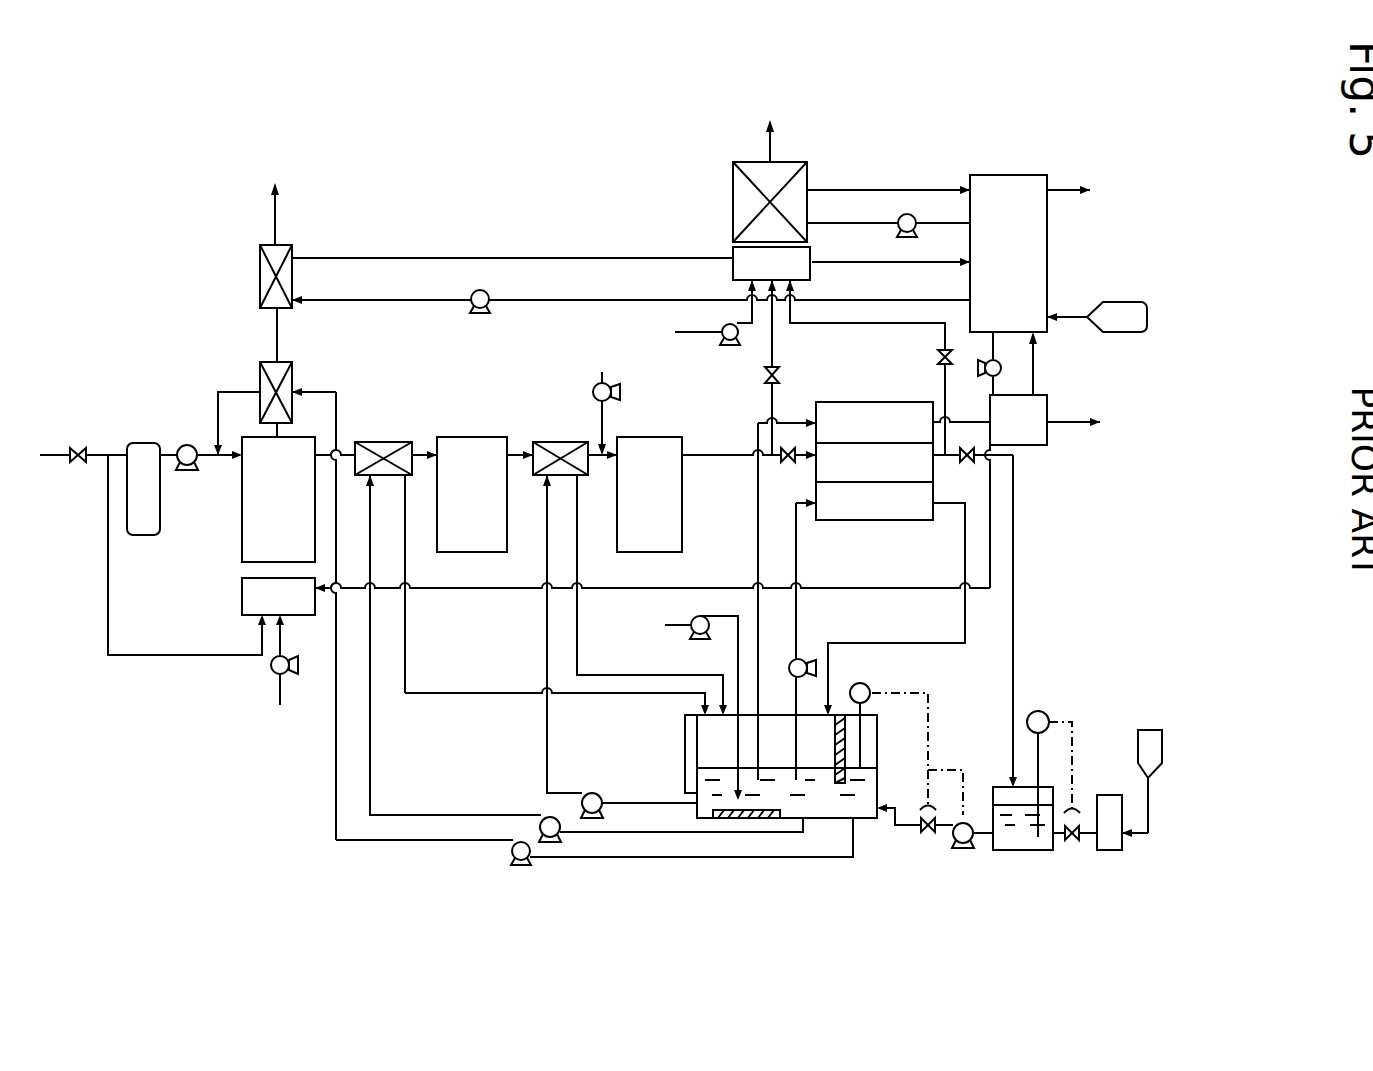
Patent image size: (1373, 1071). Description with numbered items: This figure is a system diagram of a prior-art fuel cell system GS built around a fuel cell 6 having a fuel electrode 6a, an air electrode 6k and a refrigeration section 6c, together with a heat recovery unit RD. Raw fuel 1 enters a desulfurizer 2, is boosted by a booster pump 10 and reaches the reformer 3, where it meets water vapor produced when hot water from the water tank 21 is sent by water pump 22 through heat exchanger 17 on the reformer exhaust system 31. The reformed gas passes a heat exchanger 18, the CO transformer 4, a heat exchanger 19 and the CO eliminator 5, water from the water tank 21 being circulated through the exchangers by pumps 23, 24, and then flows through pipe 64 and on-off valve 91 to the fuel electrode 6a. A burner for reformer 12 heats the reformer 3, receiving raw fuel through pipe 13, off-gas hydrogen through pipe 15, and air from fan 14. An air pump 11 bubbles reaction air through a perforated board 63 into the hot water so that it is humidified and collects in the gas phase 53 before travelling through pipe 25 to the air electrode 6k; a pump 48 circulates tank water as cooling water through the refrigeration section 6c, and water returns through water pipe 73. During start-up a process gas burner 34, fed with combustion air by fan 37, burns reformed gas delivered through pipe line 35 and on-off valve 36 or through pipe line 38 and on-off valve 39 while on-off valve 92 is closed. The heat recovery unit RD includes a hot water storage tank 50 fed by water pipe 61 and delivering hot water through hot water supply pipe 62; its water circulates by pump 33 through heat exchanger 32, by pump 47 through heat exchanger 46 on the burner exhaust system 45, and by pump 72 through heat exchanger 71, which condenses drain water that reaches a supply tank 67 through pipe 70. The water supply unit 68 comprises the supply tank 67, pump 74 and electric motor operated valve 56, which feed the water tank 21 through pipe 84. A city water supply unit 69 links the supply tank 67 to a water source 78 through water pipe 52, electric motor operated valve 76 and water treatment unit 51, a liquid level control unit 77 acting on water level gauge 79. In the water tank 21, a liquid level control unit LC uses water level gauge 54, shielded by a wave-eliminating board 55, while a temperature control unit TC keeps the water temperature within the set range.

The raw fuel 1 is at (50, 452).
The desulfurizer 2 is at (150, 536).
The reformer 3 is at (242, 528).
The CO transformer 4 is at (470, 552).
The CO eliminator 5 is at (648, 552).
The fuel cell 6 is at (862, 400).
The air electrode 6k is at (827, 402).
The fuel electrode 6a is at (816, 473).
The refrigeration section 6c is at (832, 521).
The booster pump 10 is at (187, 444).
The air pump 11 is at (690, 632).
The burner for reformer 12 is at (242, 598).
The pipe 13 is at (108, 600).
The fan 14 is at (271, 671).
The pipe 15 is at (448, 588).
The heat exchanger 17 is at (260, 368).
The heat exchanger 18 is at (385, 442).
The heat exchanger 19 is at (553, 442).
The water tank 21 is at (878, 750).
The water pump 22 is at (512, 856).
The pump 23 is at (543, 819).
The pump 24 is at (600, 795).
The pipe 25 is at (758, 531).
The exhaust system 31 is at (277, 332).
The heat exchanger 32 is at (260, 272).
The pump 33 is at (490, 306).
The process gas burner (PG burner) 34 is at (733, 252).
The pipe line 35 is at (770, 411).
The on-off valve 36 is at (765, 376).
The fan 37 is at (722, 340).
The pipe line 38 is at (945, 388).
The on-off valve 39 is at (940, 357).
The exhaust system 45 is at (768, 150).
The heat exchanger 46 is at (733, 190).
The pump 47 is at (898, 218).
The pump 48 is at (808, 660).
The hot water storage tank 50 is at (1047, 232).
The water treatment unit (ion exchange resin) 51 is at (1112, 851).
The water pipe 52 is at (1150, 800).
The gas phase (air portion) 53 is at (778, 735).
The water level gauge 54 is at (846, 735).
The wave-eliminating board 55 is at (837, 748).
The electric motor operated valve 56 is at (932, 840).
The water pipe 61 is at (1080, 318).
The hot water supply pipe 62 is at (1062, 186).
The perforated board 63 is at (740, 818).
The pipe 64 is at (715, 460).
The supply tank 67 is at (1005, 795).
The water supply unit 68 is at (913, 850).
The city water supply unit 69 is at (1150, 843).
The pipe 70 is at (1013, 540).
The heat exchanger 71 is at (1047, 432).
The pump 72 is at (979, 368).
The water pipe 73 is at (965, 615).
The pump 74 is at (968, 845).
The electric motor operated valve 76 is at (1077, 808).
The liquid level control unit 77 is at (1040, 710).
The water source 78 is at (1150, 728).
The water level gauge 79 is at (1020, 835).
The pipe 84 is at (893, 818).
The on-off valve 91 is at (783, 452).
The on-off valve 92 is at (972, 462).
The fuel cell system GS is at (242, 318).
The heat recovery unit RD is at (875, 184).
The liquid level control unit LC is at (868, 690).
The temperature control unit TC is at (685, 735).